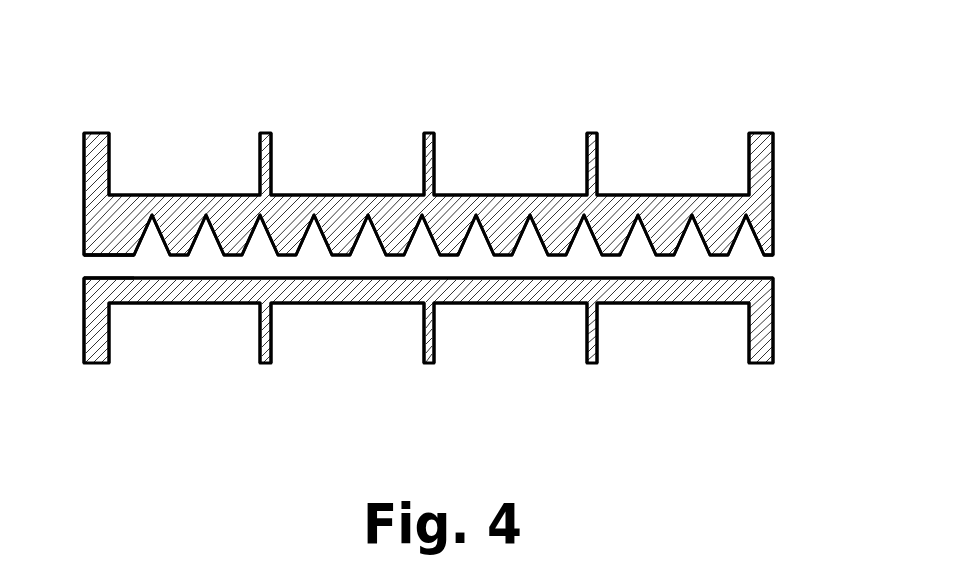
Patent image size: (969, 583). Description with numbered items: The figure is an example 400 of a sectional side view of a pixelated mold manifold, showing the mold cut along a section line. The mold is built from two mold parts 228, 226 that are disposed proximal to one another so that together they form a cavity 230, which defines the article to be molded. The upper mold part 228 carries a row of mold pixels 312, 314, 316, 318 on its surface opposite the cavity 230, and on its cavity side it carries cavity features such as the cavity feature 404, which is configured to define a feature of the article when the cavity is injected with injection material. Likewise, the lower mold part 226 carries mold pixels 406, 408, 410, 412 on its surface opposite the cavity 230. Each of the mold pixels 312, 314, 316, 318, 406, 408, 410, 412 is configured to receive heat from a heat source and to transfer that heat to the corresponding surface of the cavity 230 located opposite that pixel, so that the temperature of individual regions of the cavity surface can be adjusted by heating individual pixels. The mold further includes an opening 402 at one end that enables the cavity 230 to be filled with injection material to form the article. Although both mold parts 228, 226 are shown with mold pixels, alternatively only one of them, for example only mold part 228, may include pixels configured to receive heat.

The example sectional view 400 is at (105, 43).
The mold part 228 is at (773, 133).
The mold part 226 is at (428, 365).
The cavity feature 404 is at (774, 203).
The cavity 230 is at (745, 269).
The opening 402 is at (80, 260).
The mold pixel 312 is at (183, 152).
The mold pixel 314 is at (330, 152).
The mold pixel 316 is at (508, 152).
The mold pixel 318 is at (677, 152).
The mold pixel 406 is at (175, 354).
The mold pixel 408 is at (345, 354).
The mold pixel 410 is at (542, 354).
The mold pixel 412 is at (683, 354).